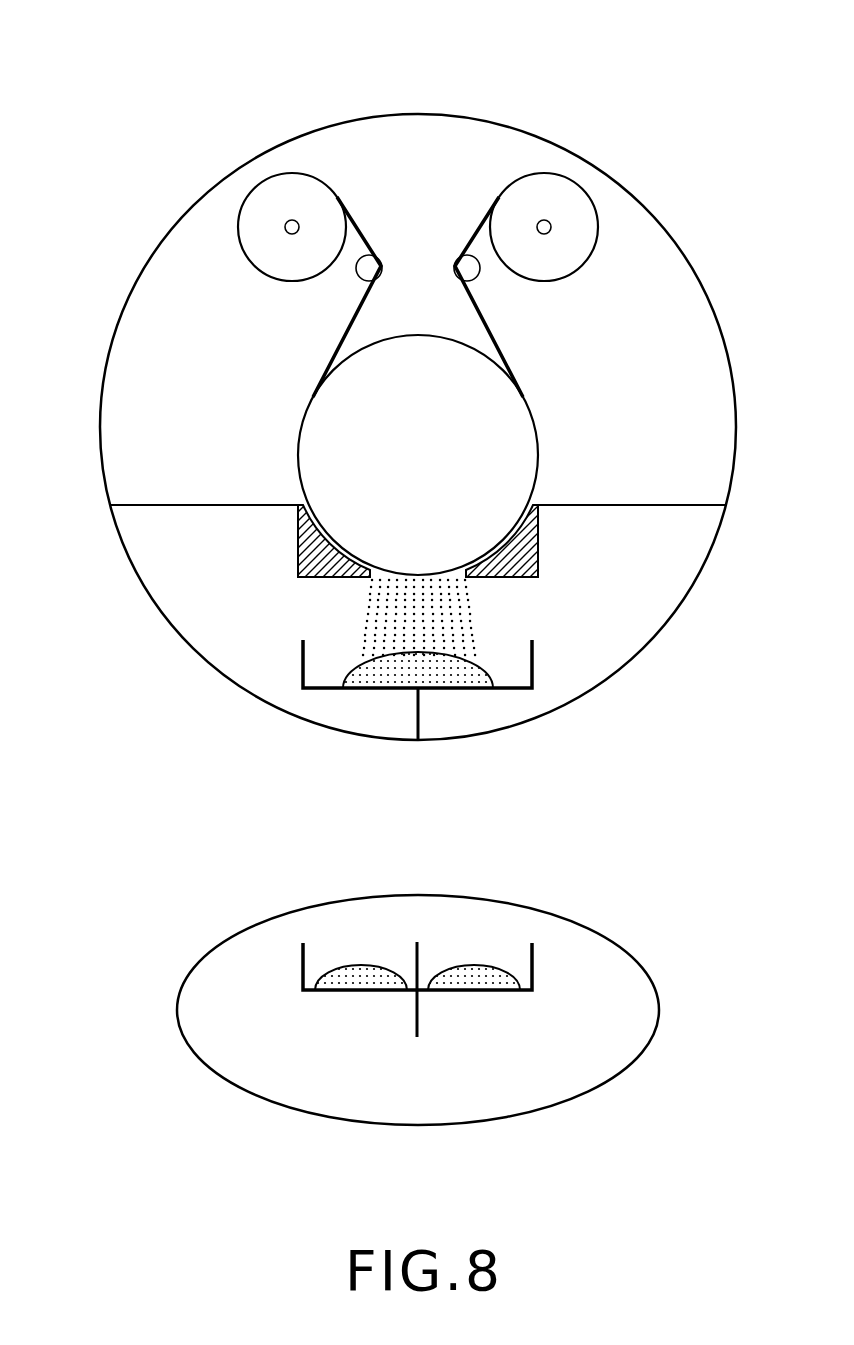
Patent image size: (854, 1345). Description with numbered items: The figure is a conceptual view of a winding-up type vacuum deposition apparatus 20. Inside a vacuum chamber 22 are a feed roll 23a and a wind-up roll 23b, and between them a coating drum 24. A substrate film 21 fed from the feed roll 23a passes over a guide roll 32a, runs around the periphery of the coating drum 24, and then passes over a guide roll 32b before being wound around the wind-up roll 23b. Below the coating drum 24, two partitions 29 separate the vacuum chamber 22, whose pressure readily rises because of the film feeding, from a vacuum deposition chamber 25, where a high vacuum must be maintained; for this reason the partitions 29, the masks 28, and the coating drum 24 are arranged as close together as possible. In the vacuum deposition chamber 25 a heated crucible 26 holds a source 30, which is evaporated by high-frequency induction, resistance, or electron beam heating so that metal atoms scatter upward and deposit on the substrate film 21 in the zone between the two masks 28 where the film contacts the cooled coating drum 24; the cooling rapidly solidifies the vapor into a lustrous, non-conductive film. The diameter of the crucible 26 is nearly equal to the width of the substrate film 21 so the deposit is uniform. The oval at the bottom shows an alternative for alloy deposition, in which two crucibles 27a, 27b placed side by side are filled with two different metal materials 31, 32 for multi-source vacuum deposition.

The vacuum deposition apparatus 20 is at (425, 95).
The substrate film 21 is at (340, 338).
The vacuum chamber 22 is at (640, 250).
The feed roll 23a is at (298, 223).
The wind-up roll 23b is at (538, 223).
The coating drum 24 is at (418, 353).
The vacuum deposition chamber 25 is at (606, 607).
The crucible 26 is at (532, 667).
The crucible 27a is at (359, 987).
The crucible 27b is at (474, 987).
The mask 28 is at (300, 553).
The partition 29 is at (166, 505).
The source 30 is at (383, 692).
The metal material 31 is at (358, 965).
The metal material 32 is at (473, 965).
The guide roll 32a is at (362, 279).
The guide roll 32b is at (474, 279).